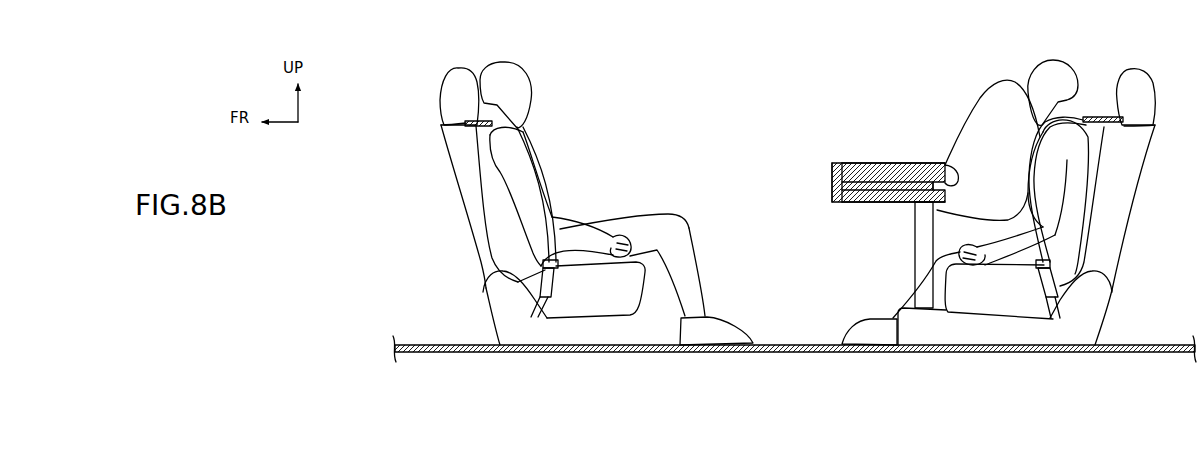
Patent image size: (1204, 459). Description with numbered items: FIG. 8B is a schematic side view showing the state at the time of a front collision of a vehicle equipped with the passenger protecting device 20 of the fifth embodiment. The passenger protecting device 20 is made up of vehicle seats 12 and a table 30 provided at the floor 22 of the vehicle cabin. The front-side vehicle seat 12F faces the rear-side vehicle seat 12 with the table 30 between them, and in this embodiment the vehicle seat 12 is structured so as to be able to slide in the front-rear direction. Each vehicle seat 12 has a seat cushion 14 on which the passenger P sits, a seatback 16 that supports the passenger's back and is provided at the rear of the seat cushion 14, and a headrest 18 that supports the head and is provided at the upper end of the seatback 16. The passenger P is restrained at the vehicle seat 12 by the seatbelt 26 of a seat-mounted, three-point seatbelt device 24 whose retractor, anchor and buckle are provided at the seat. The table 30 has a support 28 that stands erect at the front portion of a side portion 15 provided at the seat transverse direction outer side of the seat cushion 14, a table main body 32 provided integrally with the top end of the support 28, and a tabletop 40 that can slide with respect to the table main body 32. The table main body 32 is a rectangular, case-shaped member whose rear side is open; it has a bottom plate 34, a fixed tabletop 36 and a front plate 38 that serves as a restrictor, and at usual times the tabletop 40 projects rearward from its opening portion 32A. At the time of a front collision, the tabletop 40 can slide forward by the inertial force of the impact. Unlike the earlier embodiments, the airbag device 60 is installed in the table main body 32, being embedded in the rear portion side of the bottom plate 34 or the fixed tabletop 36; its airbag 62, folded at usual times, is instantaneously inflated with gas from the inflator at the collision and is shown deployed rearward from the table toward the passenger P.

The vehicle seat 12 is at (1134, 71).
The front-side vehicle seat 12F is at (451, 68).
The seat cushion 14 is at (635, 314).
The side portion 15 is at (913, 335).
The seatback 16 is at (480, 210).
The headrest 18 is at (455, 97).
The passenger protecting device 20 is at (907, 211).
The floor 22 is at (1157, 345).
The seatbelt device 24 is at (560, 290).
The seatbelt 26 is at (556, 196).
The support 28 is at (905, 283).
The table 30 is at (893, 231).
The table main body 32 is at (893, 164).
The opening portion 32A is at (953, 180).
The bottom plate 34 is at (843, 203).
The fixed tabletop 36 is at (907, 164).
The front plate 38 is at (832, 180).
The tabletop 40 is at (896, 203).
The airbag device 60 is at (986, 132).
The airbag 62 is at (997, 122).
The passenger P is at (528, 70).